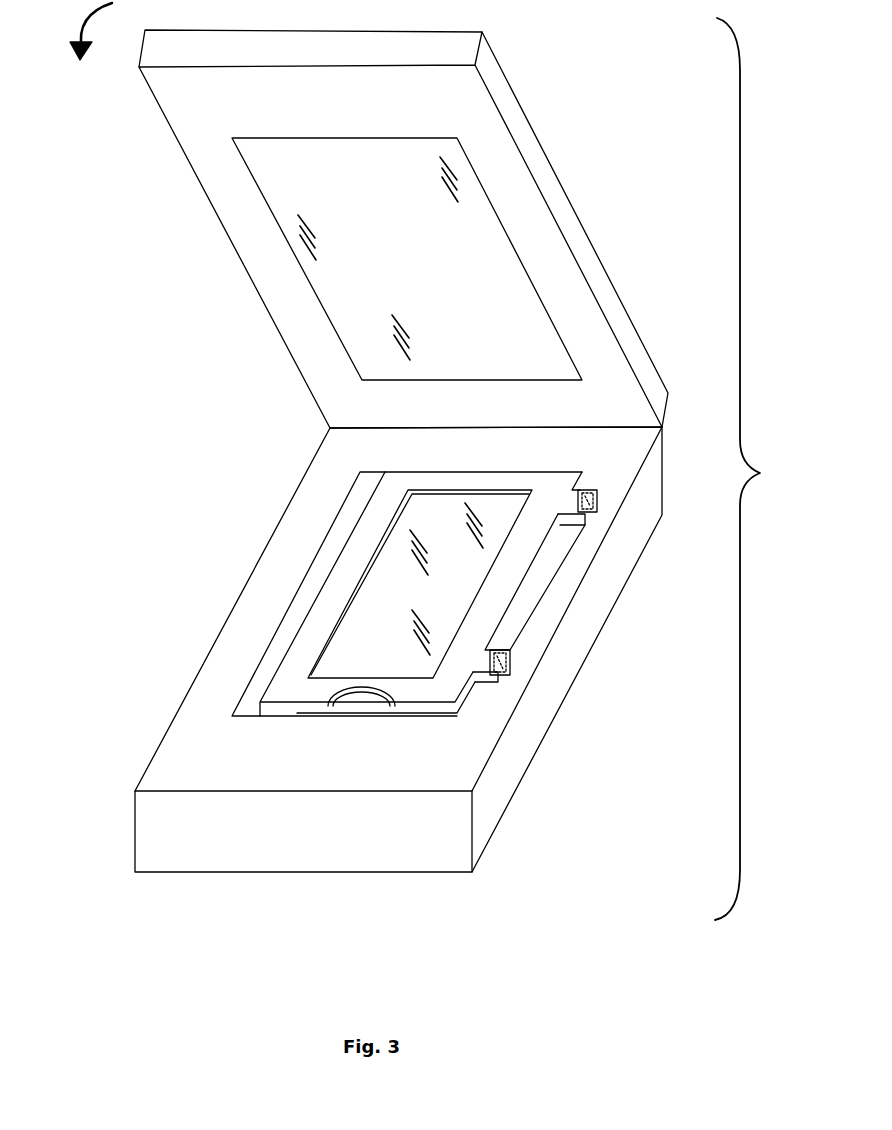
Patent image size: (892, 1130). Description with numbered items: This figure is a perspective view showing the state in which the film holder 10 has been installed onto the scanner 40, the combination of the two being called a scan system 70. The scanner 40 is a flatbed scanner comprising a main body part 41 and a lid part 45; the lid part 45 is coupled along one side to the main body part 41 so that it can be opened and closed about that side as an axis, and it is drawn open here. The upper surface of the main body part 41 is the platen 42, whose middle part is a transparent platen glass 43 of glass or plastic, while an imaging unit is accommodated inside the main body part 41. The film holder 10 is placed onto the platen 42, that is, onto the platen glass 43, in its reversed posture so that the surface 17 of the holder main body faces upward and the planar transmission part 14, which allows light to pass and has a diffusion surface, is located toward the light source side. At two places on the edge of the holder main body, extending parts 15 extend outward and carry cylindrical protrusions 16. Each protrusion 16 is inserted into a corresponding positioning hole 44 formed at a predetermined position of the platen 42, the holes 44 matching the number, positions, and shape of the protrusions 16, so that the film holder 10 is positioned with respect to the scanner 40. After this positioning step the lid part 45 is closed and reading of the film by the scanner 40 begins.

The scan system 70 is at (761, 469).
The lid part 45 is at (545, 180).
The scanner 40 is at (552, 838).
The main body part 41 is at (517, 763).
The platen glass 43 is at (295, 628).
The platen 42 is at (610, 473).
The film holder 10 is at (358, 522).
The surface 17 is at (328, 605).
The transmission part 14 is at (453, 583).
The extending parts 15 is at (587, 518).
The positioning holes 44 is at (595, 488).
The protrusions 16 is at (593, 505).